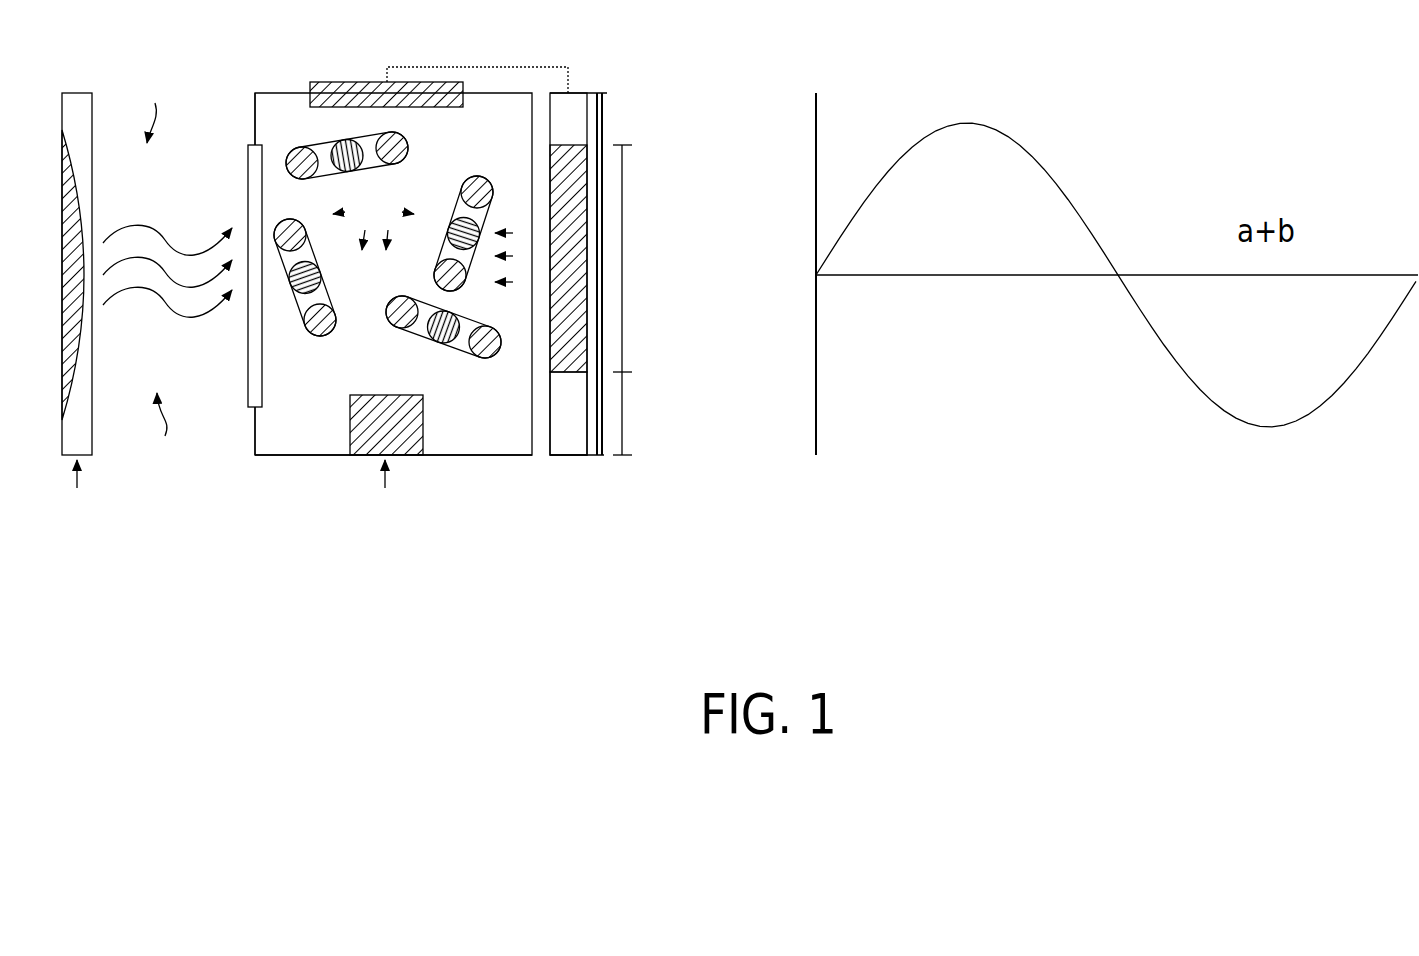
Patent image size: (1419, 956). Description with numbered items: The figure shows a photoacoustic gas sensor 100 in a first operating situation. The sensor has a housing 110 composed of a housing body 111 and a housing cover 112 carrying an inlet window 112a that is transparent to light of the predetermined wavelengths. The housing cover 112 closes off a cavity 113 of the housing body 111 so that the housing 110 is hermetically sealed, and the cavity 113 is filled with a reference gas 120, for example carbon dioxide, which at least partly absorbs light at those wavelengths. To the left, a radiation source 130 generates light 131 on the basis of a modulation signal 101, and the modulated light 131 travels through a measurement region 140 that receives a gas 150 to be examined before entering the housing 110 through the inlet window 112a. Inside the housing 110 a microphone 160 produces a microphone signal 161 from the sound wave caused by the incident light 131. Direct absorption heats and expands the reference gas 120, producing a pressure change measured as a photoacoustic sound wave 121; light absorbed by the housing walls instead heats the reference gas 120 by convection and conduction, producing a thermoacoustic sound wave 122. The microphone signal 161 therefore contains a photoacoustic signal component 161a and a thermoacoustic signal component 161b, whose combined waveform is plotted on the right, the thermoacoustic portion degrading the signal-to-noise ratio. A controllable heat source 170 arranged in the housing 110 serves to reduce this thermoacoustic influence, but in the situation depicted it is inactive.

The photoacoustic gas sensor 100 is at (232, 635).
The modulation signal 101 is at (230, 492).
The housing 110 is at (478, 457).
The housing body 111 is at (280, 457).
The housing cover 112 is at (254, 95).
The inlet window 112a is at (248, 177).
The cavity 113 is at (262, 443).
The reference gas 120 is at (478, 357).
The photoacoustic sound wave 121 is at (400, 200).
The thermoacoustic sound wave 122 is at (507, 227).
The radiation source 130 is at (73, 92).
The light 131 is at (170, 303).
The measurement region 140 is at (156, 433).
The gas to be examined 150 is at (153, 105).
The microphone 160 is at (366, 82).
The microphone signal 161 is at (445, 66).
The photoacoustic signal component 161a is at (710, 452).
The thermoacoustic signal component 161b is at (683, 223).
The controllable heat source 170 is at (365, 395).